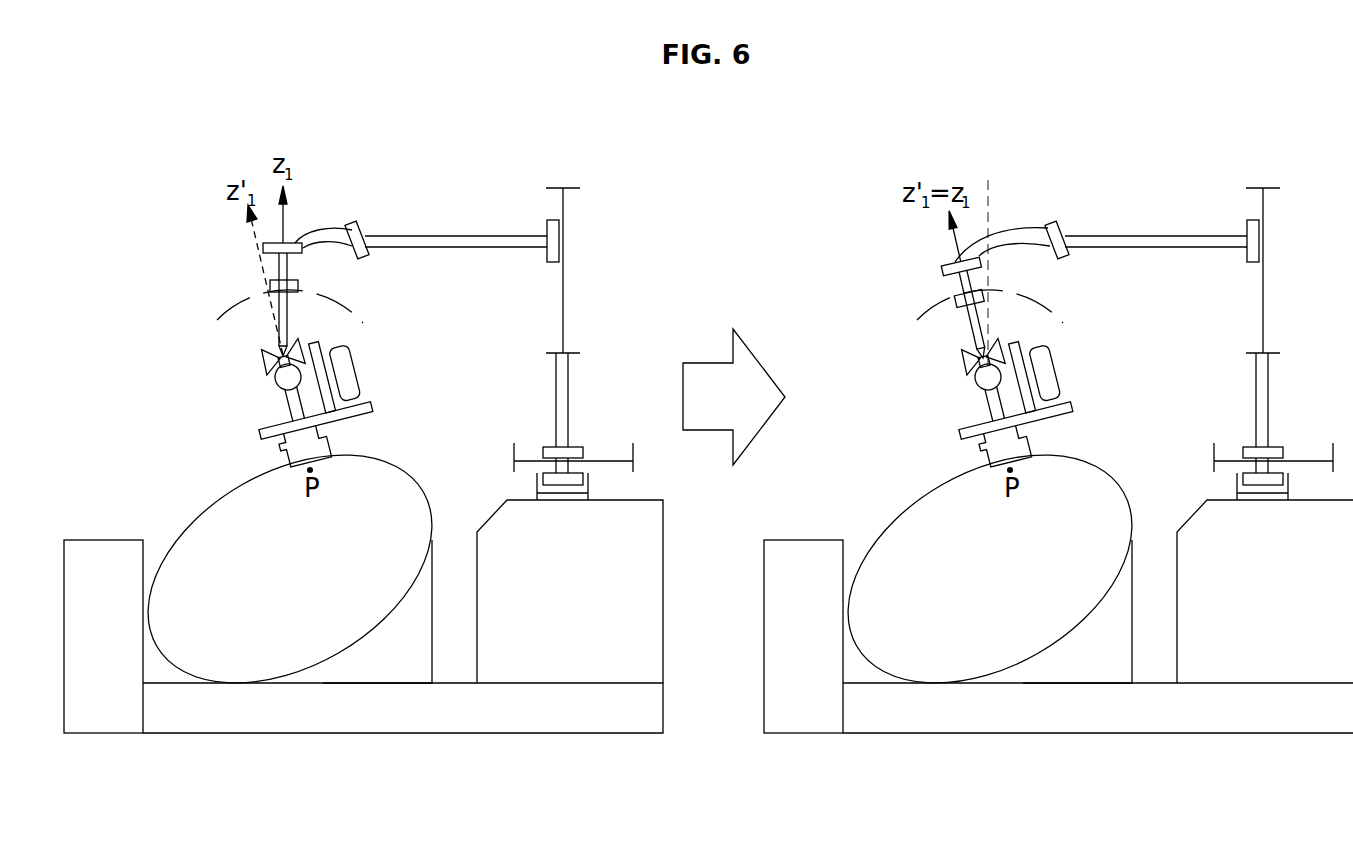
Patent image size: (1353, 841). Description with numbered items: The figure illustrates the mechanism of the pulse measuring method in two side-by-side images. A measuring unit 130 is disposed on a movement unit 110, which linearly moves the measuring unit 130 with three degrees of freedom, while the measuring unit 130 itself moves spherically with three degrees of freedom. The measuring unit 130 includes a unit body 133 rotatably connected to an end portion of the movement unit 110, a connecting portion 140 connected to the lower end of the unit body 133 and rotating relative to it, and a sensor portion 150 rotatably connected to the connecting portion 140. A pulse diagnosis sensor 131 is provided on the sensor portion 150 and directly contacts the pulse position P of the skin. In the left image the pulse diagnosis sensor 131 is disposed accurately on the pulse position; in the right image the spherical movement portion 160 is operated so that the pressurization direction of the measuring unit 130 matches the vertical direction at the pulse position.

The movement unit 110 is at (449, 220).
The spherical movement portion 160 is at (318, 218).
The measuring unit 130 is at (190, 285).
The unit body 133 is at (258, 324).
The connecting portion 140 is at (250, 359).
The sensor portion 150 is at (263, 396).
The pulse diagnosis sensor 131 is at (280, 462).